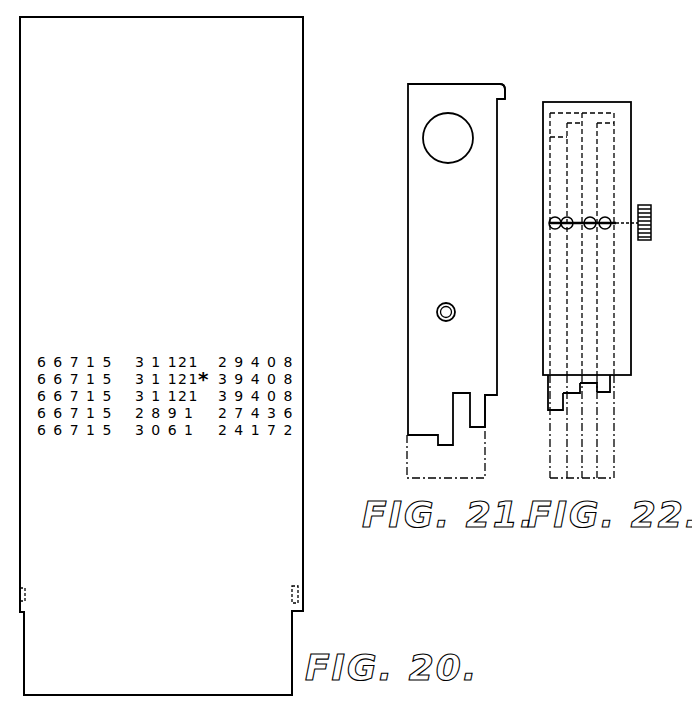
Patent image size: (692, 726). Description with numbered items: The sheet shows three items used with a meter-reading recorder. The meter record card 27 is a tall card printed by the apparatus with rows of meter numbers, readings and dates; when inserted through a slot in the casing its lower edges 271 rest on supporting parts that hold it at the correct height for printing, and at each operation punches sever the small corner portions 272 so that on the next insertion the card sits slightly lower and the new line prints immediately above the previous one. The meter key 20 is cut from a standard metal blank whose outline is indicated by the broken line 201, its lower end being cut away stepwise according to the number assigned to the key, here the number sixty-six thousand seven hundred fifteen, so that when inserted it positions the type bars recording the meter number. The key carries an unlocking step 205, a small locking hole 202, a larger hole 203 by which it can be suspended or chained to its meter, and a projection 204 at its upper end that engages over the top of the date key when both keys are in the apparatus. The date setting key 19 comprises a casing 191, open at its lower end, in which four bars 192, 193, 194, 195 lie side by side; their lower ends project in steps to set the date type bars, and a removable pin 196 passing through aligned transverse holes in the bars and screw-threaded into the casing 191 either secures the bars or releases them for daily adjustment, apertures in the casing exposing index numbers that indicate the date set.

In FIG. 20, the meter record card 27 is at (296, 82).
In FIG. 20, the edges of the card 271 is at (26, 612).
In FIG. 20, the portions of the card 272 is at (26, 592).
In FIG. 21, the meter key 20 is at (408, 178).
In FIG. 21, the broken line 201 is at (406, 457).
In FIG. 21, the locking hole 202 is at (437, 311).
In FIG. 21, the hole 203 is at (432, 132).
In FIG. 21, the projection 204 is at (507, 93).
In FIG. 21, the unlocking step 205 is at (485, 395).
In FIG. 22, the date setting key 19 is at (632, 286).
In FIG. 22, the casing 191 is at (626, 136).
In FIG. 22, the bar 192 is at (552, 382).
In FIG. 22, the bar 193 is at (563, 395).
In FIG. 22, the bar 194 is at (586, 384).
In FIG. 22, the bar 195 is at (600, 393).
In FIG. 22, the removable pin 196 is at (660, 186).